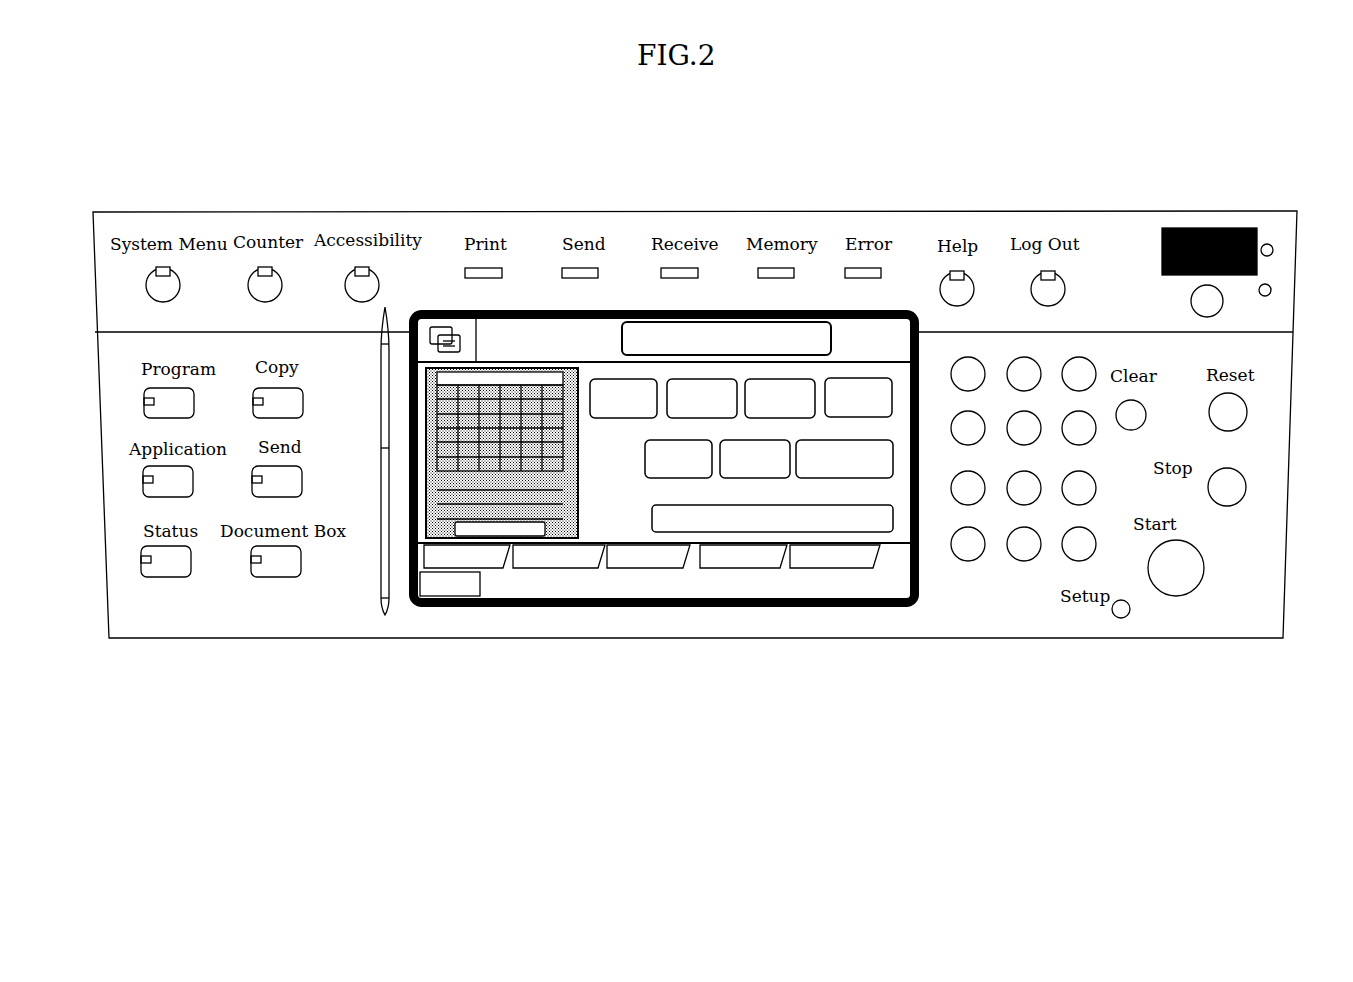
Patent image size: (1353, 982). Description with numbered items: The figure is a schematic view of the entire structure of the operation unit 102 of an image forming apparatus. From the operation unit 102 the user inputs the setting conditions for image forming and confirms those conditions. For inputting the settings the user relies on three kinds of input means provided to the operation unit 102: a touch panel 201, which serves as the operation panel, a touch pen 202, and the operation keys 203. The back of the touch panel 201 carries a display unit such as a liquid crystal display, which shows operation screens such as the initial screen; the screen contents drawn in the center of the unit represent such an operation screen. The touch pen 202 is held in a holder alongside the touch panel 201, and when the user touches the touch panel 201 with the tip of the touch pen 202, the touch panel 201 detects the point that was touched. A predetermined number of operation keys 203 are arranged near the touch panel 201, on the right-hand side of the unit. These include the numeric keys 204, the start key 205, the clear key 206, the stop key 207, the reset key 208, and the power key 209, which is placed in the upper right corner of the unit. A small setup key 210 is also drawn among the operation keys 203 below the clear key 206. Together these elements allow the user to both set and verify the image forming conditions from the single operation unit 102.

The operation unit 102 is at (705, 650).
The touch panel 201 is at (509, 622).
The touch pen 202 is at (383, 615).
The operation key 203 is at (935, 659).
The numeric keys 204 is at (1018, 578).
The start key 205 is at (1176, 581).
The clear key 206 is at (1127, 426).
The stop key 207 is at (1228, 496).
The reset key 208 is at (1232, 422).
The power key 209 is at (1215, 308).
The setup key 210 is at (1121, 615).